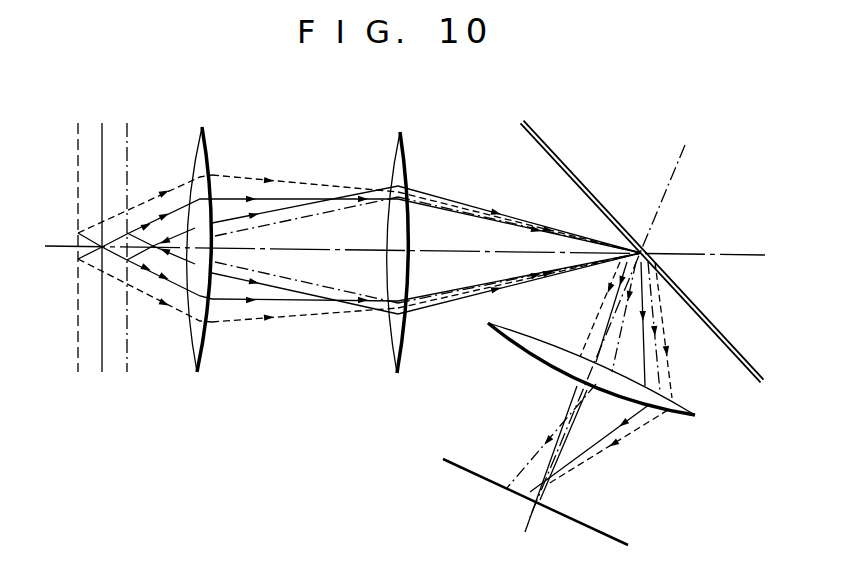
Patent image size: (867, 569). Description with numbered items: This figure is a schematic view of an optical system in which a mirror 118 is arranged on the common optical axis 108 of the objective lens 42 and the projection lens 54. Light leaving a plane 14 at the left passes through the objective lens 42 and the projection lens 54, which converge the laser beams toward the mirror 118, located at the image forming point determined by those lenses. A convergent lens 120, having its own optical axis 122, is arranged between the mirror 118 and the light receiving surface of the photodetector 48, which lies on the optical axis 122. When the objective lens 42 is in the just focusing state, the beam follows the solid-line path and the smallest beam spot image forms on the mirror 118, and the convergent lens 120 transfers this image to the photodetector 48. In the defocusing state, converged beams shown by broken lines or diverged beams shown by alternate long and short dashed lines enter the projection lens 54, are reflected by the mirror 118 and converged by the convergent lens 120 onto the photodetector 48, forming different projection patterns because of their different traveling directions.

The object/source plane 14 is at (105, 138).
The objective lens 42 is at (204, 140).
The projection lens 54 is at (404, 152).
The mirror 118 is at (548, 129).
The optical axis 122 is at (672, 180).
The common optical axis 108 is at (722, 256).
The convergent lens 120 is at (686, 420).
The photodetector 48 is at (618, 538).